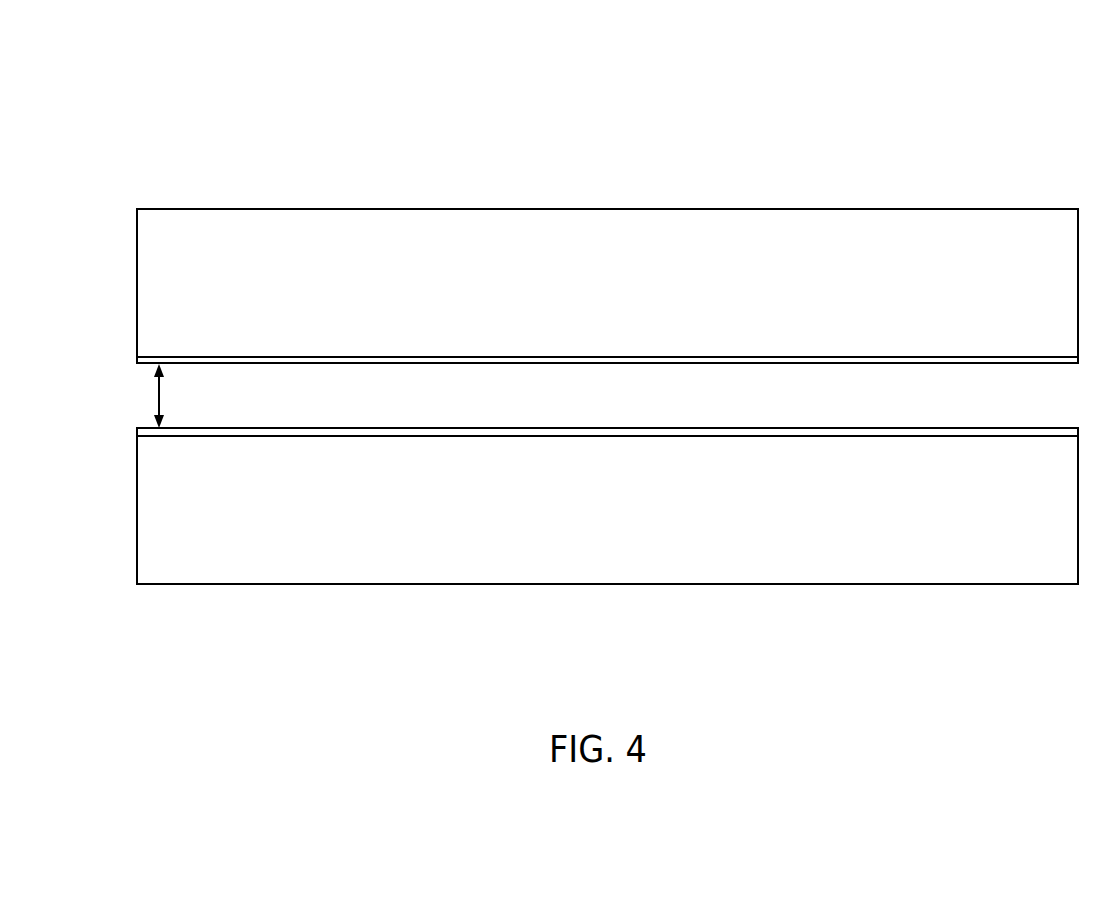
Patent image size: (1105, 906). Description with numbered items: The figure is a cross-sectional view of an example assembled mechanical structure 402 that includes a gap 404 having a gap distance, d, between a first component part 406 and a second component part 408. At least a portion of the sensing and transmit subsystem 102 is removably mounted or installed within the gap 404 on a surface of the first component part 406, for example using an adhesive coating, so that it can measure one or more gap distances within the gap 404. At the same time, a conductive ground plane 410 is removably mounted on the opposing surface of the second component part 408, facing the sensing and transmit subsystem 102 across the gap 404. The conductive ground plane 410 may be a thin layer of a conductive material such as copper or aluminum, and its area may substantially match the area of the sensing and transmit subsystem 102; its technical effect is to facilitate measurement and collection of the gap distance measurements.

The assembled mechanical structure 402 is at (857, 100).
The second component part 408 is at (571, 208).
The conductive ground plane 410 is at (367, 364).
The first component part 406 is at (397, 585).
The sensing and transmit subsystem 102 is at (497, 427).
The gap 404 is at (159, 396).